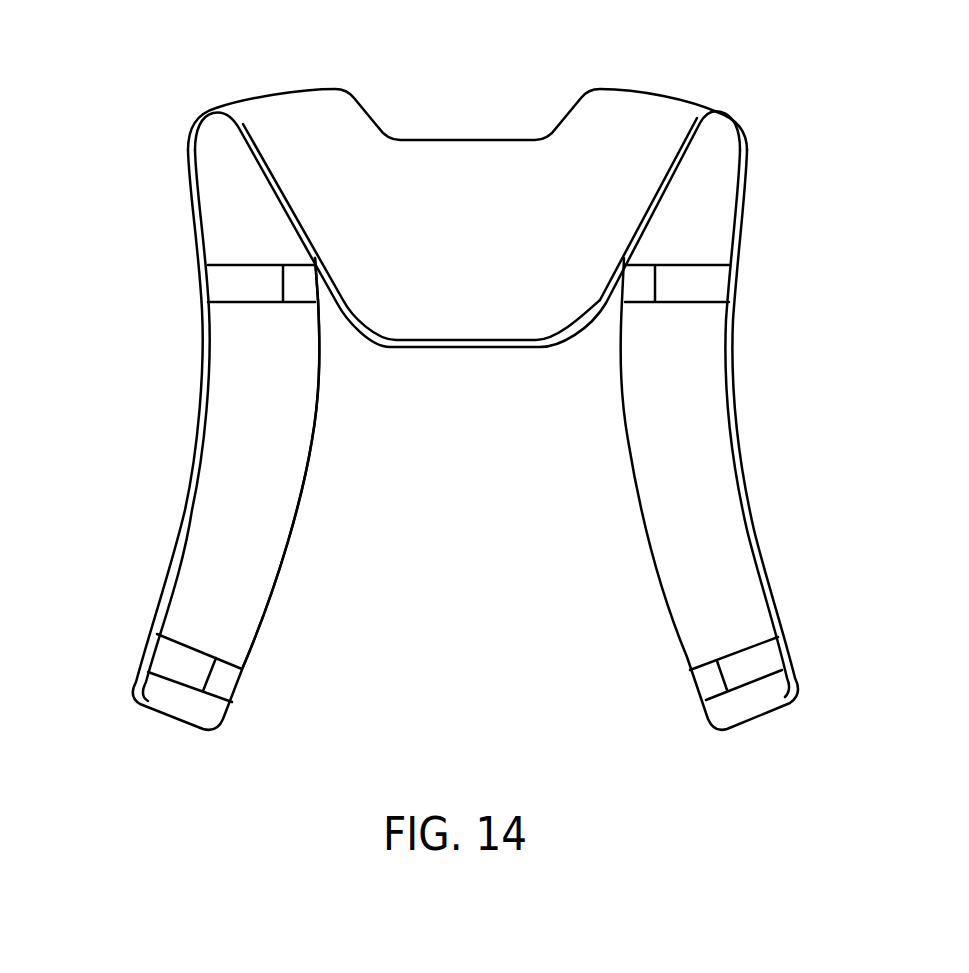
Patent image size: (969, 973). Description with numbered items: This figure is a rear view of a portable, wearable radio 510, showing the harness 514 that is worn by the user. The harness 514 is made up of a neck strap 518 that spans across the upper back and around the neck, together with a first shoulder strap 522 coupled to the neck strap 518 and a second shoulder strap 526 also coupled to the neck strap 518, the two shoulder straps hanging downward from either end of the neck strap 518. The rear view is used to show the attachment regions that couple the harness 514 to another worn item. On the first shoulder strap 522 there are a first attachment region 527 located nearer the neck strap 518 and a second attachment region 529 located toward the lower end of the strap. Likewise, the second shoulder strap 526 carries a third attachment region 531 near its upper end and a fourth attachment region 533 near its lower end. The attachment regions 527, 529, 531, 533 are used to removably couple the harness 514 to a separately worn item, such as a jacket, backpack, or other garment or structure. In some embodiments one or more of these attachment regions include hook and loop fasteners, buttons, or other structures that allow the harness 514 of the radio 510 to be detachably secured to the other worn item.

The portable, wearable radio 510 is at (145, 76).
The harness 514 is at (169, 201).
The neck strap 518 is at (500, 168).
The first shoulder strap 522 is at (712, 387).
The second shoulder strap 526 is at (220, 364).
The first attachment region 527 is at (237, 283).
The second attachment region 529 is at (170, 655).
The third attachment region 531 is at (693, 283).
The fourth attachment region 533 is at (748, 658).